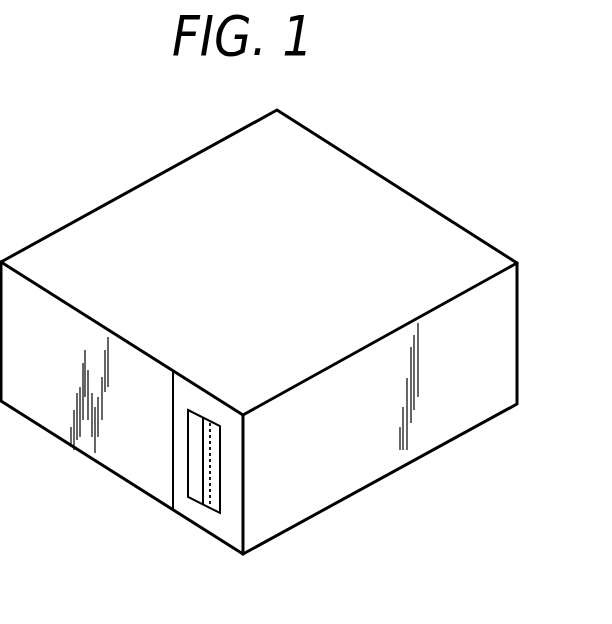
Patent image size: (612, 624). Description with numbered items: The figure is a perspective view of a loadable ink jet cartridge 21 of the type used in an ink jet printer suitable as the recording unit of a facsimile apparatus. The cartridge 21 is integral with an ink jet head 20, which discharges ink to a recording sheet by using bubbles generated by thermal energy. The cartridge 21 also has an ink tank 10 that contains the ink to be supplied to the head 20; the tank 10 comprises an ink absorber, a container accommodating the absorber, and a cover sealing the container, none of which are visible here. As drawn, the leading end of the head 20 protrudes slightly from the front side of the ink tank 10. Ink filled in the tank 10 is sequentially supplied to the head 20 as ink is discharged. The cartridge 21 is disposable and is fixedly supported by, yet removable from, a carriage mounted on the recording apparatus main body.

The ink tank 10 is at (150, 186).
The ink jet cartridge 21 is at (410, 196).
The ink jet head 20 is at (217, 510).